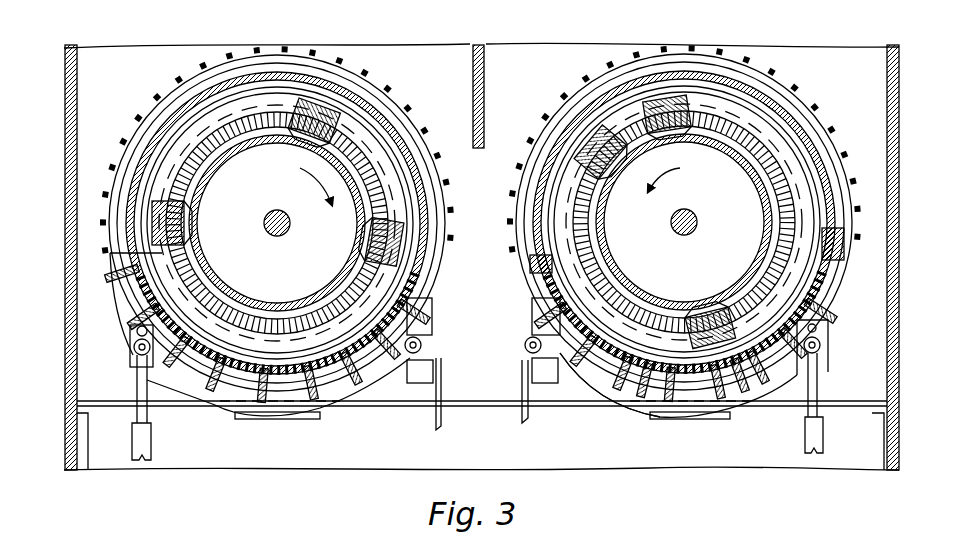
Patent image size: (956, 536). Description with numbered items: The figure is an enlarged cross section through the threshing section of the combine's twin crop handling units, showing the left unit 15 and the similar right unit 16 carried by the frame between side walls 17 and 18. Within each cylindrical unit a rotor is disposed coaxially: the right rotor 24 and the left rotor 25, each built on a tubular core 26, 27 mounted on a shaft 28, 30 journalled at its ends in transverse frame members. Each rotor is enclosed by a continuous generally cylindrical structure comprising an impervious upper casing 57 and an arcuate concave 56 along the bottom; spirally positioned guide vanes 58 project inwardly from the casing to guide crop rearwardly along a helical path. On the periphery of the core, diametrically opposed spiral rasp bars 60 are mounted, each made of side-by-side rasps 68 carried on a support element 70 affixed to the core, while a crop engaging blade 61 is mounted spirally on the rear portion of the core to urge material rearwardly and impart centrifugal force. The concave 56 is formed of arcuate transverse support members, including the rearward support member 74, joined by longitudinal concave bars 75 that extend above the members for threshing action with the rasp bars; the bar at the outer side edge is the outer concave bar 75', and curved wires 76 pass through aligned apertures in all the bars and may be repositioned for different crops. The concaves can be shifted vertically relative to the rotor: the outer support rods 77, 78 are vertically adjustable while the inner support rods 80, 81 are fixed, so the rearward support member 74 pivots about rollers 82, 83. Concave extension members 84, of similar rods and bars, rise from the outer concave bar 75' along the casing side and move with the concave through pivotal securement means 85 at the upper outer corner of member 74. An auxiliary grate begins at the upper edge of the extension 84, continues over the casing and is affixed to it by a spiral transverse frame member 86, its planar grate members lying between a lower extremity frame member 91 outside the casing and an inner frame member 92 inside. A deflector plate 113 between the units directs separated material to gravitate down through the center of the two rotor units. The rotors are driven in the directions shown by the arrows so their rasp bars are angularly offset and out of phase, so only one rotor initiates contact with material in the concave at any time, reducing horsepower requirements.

The left crop handling unit 15 is at (679, 236).
The right crop handling unit 16 is at (274, 225).
The side wall 17 is at (896, 310).
The side wall 18 is at (66, 268).
The right rotor 24 is at (240, 147).
The left rotor 25 is at (617, 142).
The tubular core 26 is at (238, 298).
The tubular core 27 is at (613, 262).
The shaft 28 is at (283, 233).
The shaft 30 is at (692, 232).
The concave 56 is at (742, 425).
The upper casing 57 is at (604, 92).
The guide vanes 58 is at (628, 98).
The rasp bar 60 is at (722, 100).
The crop engaging blade 61 is at (567, 202).
The rasps 68 is at (664, 100).
The support element 70 is at (664, 126).
The rearward support member 74 is at (587, 382).
The concave bars 75 is at (617, 411).
The outer concave bar 75' is at (840, 352).
The curved rods or wires 76 is at (762, 352).
The outer support rod 77 is at (822, 417).
The outer support rod 78 is at (138, 395).
The inner support rod 80 is at (441, 426).
The inner support rod 81 is at (525, 425).
The roller 82 is at (422, 344).
The roller 83 is at (525, 345).
The concave extension member 84 is at (829, 298).
The pivotal securement means 85 is at (820, 328).
The transverse frame member 86 is at (813, 141).
The lower extremity frame member 91 is at (845, 240).
The inner frame member 92 is at (530, 258).
The deflector plate 113 is at (501, 96).